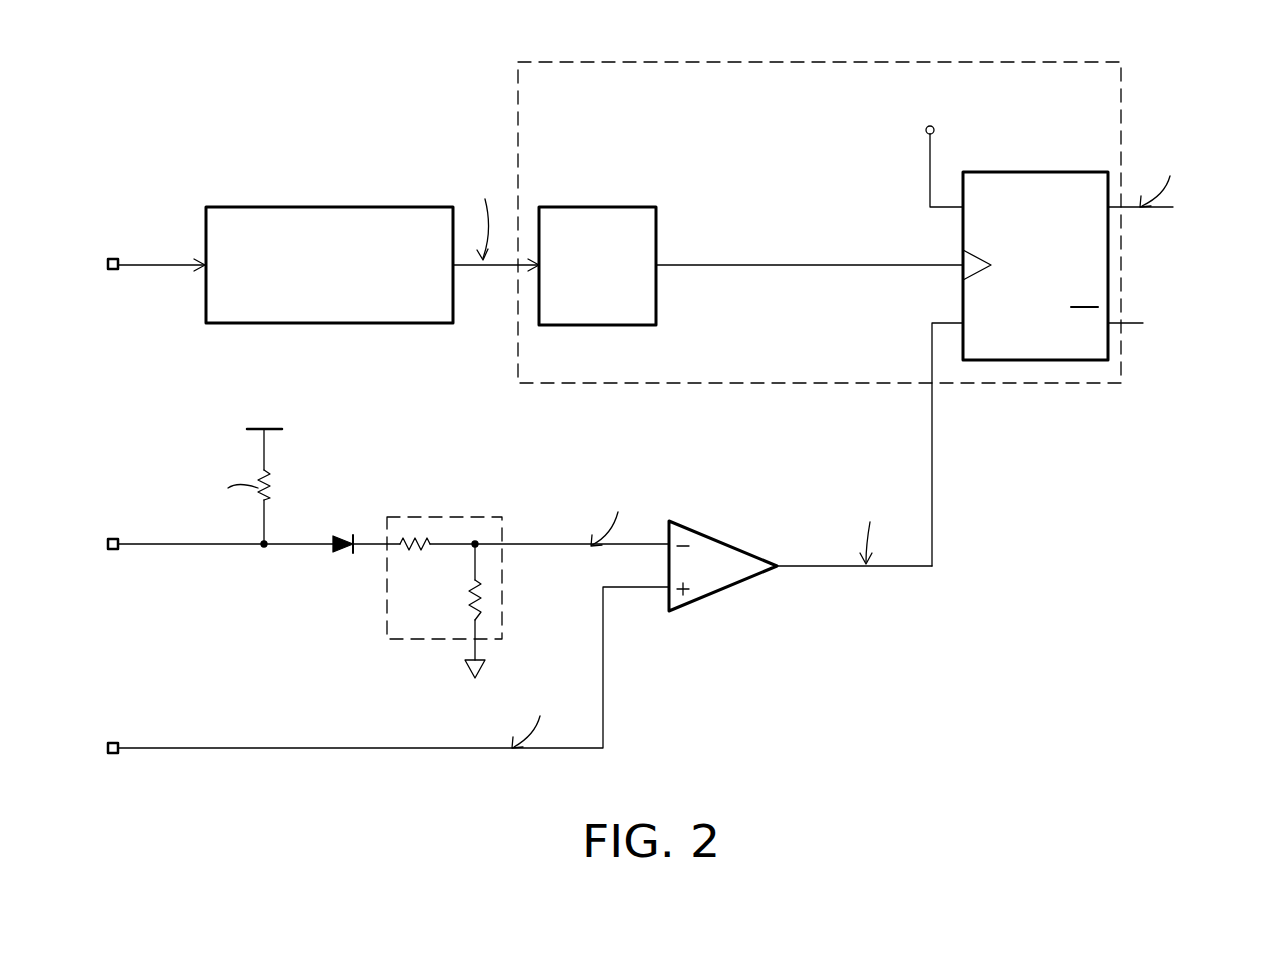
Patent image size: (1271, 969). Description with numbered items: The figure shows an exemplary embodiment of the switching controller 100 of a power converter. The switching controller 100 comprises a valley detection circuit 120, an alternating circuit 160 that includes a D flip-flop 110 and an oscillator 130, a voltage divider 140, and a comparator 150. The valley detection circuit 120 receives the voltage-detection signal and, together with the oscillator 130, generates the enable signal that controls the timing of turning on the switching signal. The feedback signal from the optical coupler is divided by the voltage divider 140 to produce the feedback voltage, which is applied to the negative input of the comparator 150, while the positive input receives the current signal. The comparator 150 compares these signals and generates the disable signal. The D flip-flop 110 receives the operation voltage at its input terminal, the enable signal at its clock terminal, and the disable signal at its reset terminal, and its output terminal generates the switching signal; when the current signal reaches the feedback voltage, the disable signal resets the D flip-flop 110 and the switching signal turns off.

The switching controller 100 is at (1249, 82).
The D flip-flop 110 is at (963, 172).
The valley detection circuit 120 is at (208, 207).
The oscillator 130 is at (540, 207).
The voltage divider 140 is at (446, 517).
The comparator 150 is at (720, 542).
The alternating circuit 160 is at (519, 62).